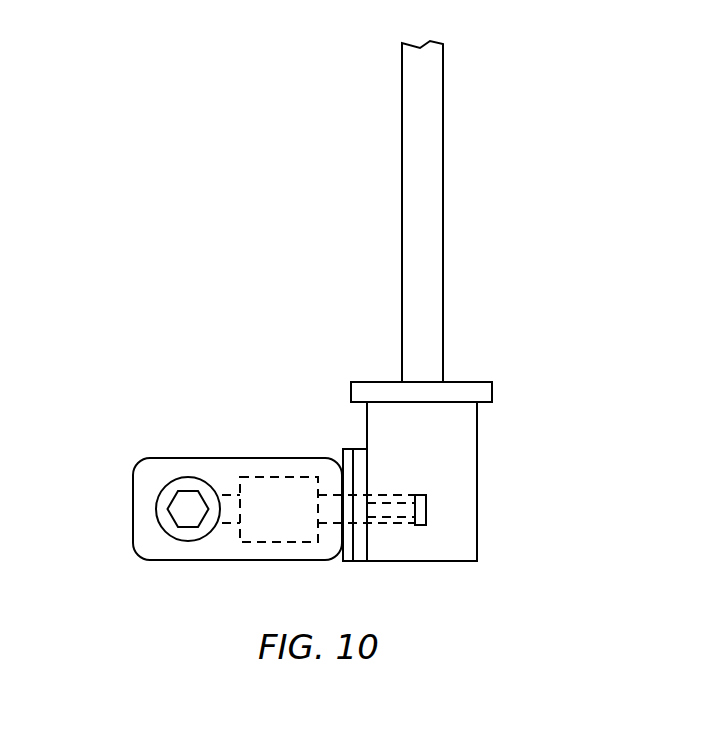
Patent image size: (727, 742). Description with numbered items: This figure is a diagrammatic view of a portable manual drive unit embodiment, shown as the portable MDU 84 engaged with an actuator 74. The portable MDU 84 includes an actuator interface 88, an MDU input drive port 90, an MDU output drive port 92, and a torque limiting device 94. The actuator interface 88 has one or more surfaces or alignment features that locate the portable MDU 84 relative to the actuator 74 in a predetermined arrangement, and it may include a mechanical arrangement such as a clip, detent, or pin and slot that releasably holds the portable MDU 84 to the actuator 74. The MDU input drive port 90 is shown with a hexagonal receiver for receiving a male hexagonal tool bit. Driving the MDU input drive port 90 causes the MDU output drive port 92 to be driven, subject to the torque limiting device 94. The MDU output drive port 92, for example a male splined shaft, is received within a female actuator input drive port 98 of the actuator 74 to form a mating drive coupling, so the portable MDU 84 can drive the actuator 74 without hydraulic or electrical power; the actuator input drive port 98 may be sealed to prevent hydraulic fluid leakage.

The actuator 74 is at (504, 370).
The portable MDU 84 is at (148, 426).
The actuator interface 88 is at (348, 448).
The MDU input drive port 90 is at (177, 512).
The MDU output drive port 92 is at (405, 495).
The torque limiting device 94 is at (272, 468).
The actuator input drive port 98 is at (427, 508).